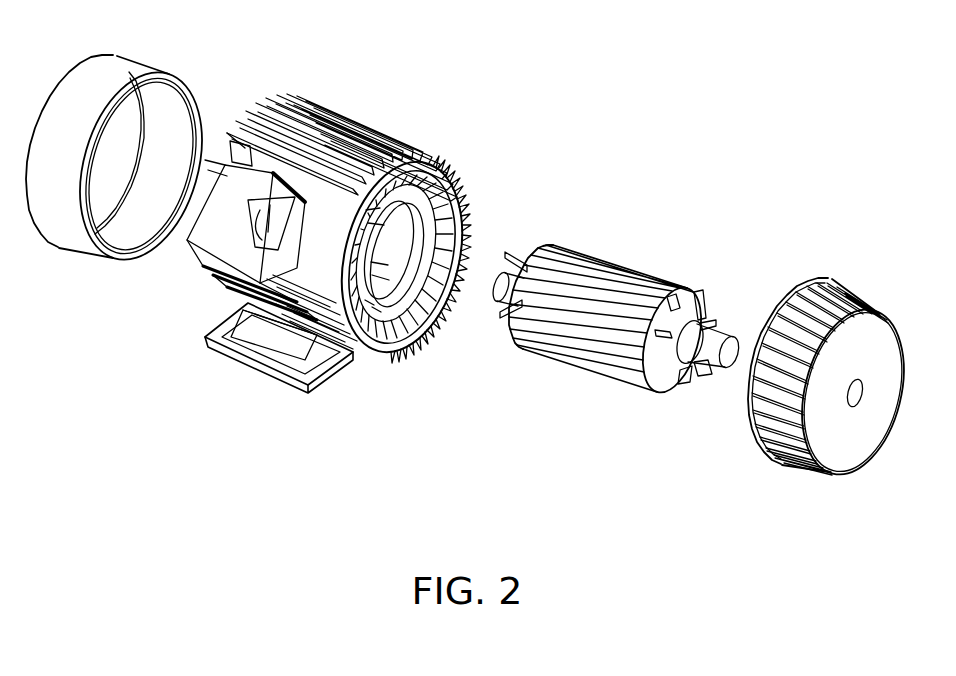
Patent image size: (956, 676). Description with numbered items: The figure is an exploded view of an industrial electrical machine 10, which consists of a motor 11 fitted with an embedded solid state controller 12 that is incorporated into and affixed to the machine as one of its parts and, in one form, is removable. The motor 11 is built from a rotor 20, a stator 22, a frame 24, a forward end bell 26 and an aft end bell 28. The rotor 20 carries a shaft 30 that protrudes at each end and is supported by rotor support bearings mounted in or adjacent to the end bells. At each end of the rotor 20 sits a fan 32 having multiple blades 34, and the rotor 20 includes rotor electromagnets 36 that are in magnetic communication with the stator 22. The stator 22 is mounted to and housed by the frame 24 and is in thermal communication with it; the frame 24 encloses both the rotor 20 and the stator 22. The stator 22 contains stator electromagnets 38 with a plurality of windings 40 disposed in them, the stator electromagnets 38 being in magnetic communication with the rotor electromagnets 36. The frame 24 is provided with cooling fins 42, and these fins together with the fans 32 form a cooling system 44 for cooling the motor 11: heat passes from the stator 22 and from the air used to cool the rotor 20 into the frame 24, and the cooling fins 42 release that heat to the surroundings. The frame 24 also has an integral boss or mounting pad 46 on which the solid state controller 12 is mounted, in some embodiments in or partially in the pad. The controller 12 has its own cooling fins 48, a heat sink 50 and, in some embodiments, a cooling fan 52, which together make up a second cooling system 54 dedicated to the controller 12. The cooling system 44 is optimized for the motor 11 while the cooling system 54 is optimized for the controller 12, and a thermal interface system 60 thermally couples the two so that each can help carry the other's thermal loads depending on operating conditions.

The electrical machine 10 is at (702, 92).
The motor 11 is at (716, 474).
The solid state controller 12 is at (200, 258).
The rotor 20 is at (603, 248).
The stator 22 is at (422, 328).
The frame 24 is at (414, 346).
The forward end bell 26 is at (890, 316).
The aft end bell 28 is at (132, 60).
The shaft 30 is at (504, 276).
The fan 32 is at (564, 220).
The blades 34 is at (700, 300).
The rotor electromagnets 36 is at (570, 376).
The stator electromagnets 38 is at (406, 152).
The windings 40 is at (448, 170).
The cooling fins 42 is at (460, 212).
The cooling system 44 is at (620, 146).
The mounting pad 46 is at (258, 346).
The cooling fins 48 is at (238, 154).
The heat sink 50 is at (216, 286).
The cooling fan 52 is at (262, 222).
The cooling system 54 is at (166, 360).
The thermal interface system 60 is at (216, 312).